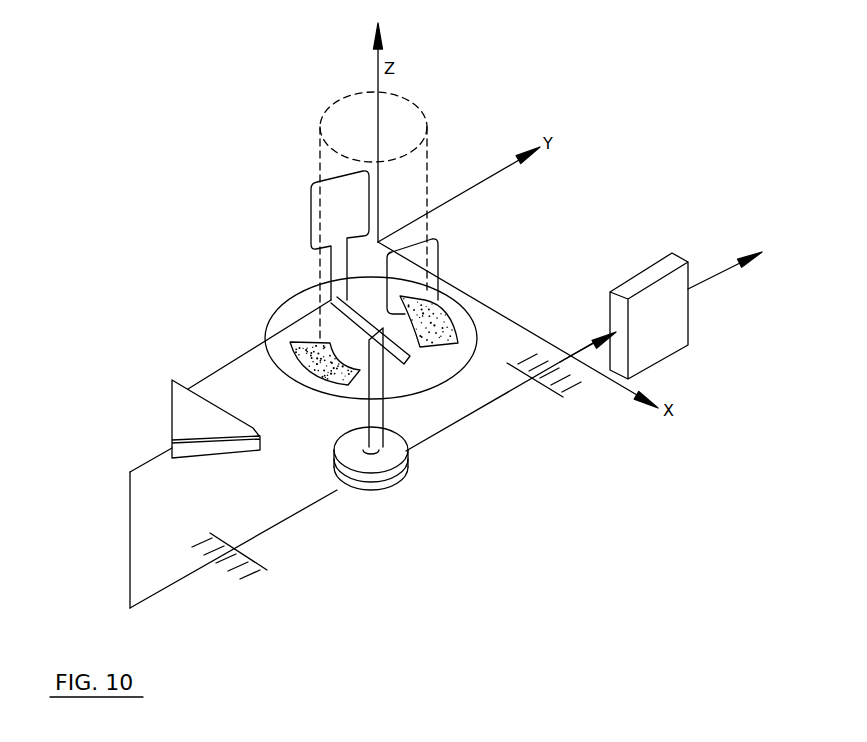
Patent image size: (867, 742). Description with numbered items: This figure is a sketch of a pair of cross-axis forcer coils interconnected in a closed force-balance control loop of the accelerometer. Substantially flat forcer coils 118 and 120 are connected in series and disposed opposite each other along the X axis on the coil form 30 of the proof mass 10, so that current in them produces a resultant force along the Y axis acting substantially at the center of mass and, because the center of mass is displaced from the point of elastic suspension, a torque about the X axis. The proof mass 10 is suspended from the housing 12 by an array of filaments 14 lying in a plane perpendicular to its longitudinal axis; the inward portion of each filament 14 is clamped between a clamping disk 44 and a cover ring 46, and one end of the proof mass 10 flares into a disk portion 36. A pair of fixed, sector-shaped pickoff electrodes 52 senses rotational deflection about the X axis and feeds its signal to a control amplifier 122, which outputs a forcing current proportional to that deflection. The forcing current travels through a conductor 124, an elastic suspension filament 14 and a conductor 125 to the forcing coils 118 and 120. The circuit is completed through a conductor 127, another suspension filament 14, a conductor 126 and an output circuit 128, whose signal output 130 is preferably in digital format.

The proof mass 10 is at (435, 108).
The housing 12 is at (256, 562).
The filaments 14 is at (300, 511).
The coil form 30 is at (318, 165).
The disk portion 36 is at (300, 307).
The clamping disk 44 is at (394, 440).
The cover ring 46 is at (397, 487).
The pickoff electrodes 52 is at (293, 357).
The forcer coil 118 is at (440, 243).
The forcer coil 120 is at (310, 212).
The control amplifier 122 is at (200, 426).
The conductor 124 is at (128, 530).
The conductor 125 is at (365, 425).
The conductor 126 is at (584, 346).
The conductor 127 is at (384, 383).
The output circuit 128 is at (638, 278).
The signal output 130 is at (702, 283).